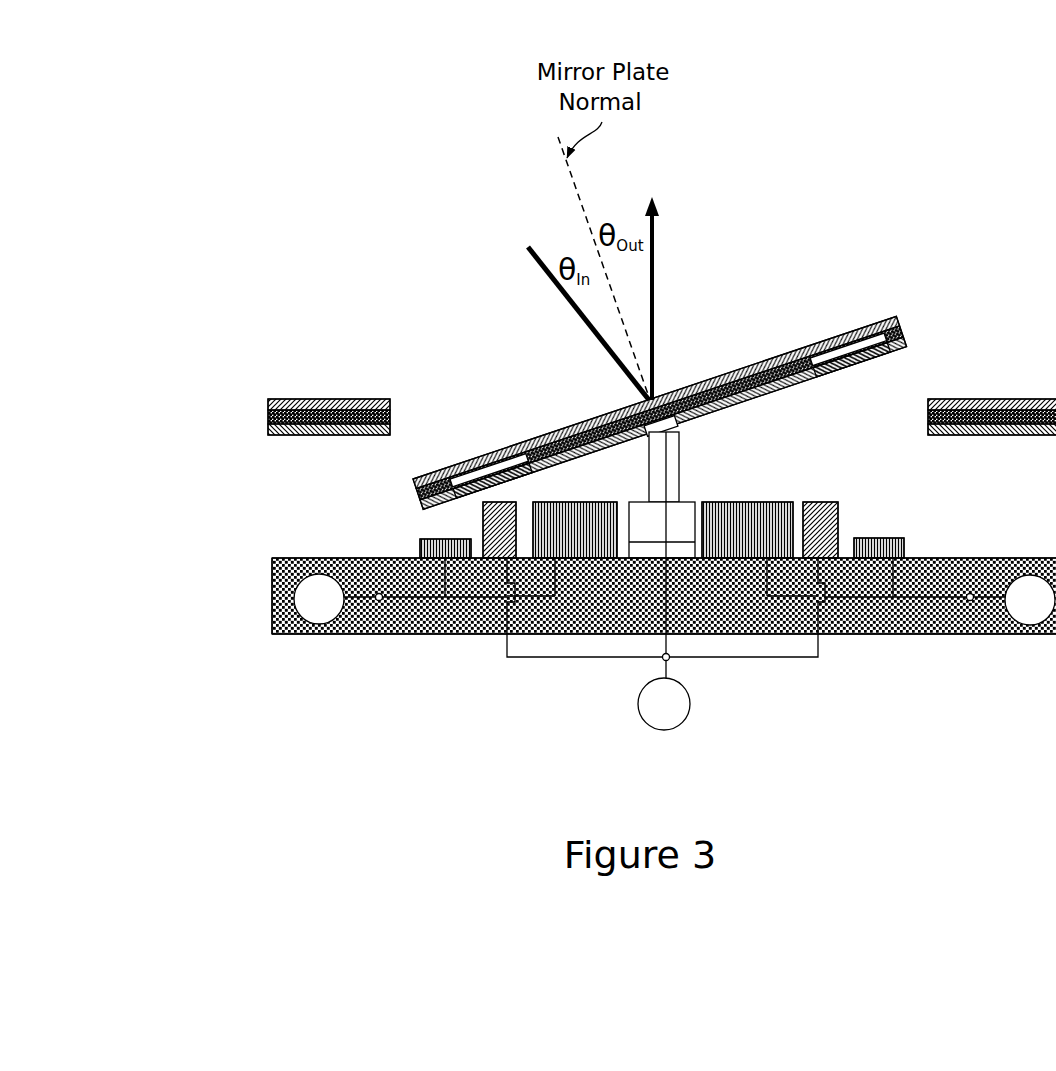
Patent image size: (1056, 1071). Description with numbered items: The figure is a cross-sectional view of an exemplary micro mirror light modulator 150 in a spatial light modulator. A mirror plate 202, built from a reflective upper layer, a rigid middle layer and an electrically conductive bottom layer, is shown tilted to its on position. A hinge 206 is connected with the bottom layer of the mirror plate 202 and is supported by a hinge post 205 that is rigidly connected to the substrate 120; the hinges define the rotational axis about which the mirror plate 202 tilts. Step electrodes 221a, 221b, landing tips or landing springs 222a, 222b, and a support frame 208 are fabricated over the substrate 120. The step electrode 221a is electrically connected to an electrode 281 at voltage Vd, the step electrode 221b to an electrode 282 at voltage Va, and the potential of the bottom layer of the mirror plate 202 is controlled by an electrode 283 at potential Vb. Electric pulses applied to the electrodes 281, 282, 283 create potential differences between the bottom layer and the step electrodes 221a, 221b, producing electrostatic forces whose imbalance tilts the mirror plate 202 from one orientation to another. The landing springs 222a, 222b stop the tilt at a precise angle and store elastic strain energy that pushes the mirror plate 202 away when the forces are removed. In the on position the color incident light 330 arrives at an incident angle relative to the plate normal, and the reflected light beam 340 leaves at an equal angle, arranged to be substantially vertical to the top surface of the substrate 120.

The substrate 120 is at (268, 628).
The light modulator 150 is at (932, 222).
The mirror plate 202 is at (282, 398).
The hinge post 205 is at (684, 478).
The hinge 206 is at (684, 431).
The support frame 208 is at (414, 548).
The step electrode 221a is at (598, 560).
The step electrode 221b is at (724, 560).
The landing spring 222a is at (514, 499).
The landing spring 222b is at (841, 509).
The electrode 281 is at (381, 604).
The electrode 282 is at (972, 604).
The electrode 283 is at (674, 664).
The color incident light 330 is at (538, 257).
The reflected light beam 340 is at (656, 236).